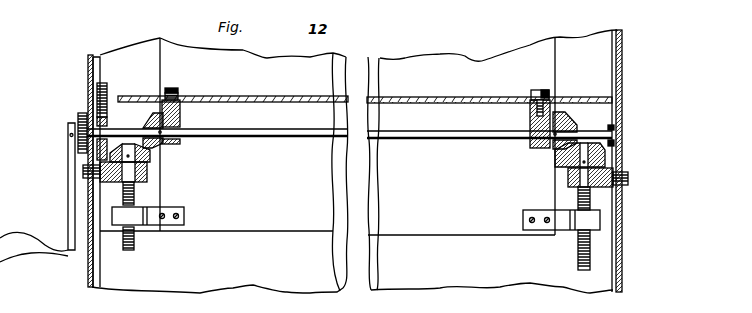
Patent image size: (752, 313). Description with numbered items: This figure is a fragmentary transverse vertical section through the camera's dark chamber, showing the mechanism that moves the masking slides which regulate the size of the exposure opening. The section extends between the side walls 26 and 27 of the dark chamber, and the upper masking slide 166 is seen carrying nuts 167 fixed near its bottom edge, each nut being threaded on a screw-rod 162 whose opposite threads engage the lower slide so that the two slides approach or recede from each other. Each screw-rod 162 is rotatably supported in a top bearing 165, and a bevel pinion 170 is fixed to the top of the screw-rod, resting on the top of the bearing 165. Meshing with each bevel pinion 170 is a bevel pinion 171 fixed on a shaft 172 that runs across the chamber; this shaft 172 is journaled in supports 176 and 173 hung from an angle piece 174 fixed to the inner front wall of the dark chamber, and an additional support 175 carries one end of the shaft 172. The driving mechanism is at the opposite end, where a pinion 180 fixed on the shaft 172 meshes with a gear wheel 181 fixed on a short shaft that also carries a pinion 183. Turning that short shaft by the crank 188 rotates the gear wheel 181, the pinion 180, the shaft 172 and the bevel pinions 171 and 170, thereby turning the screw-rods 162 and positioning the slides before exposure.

The side wall 26 is at (622, 72).
The side wall 27 is at (88, 77).
The screw-rod 162 is at (137, 241).
The top bearing 165 is at (147, 173).
The upper masking slide 166 is at (262, 229).
The nut 167 is at (138, 225).
The bevel pinion 170 is at (142, 156).
The bevel pinion 171 is at (147, 118).
The shaft 172 is at (277, 133).
The support 173 is at (528, 127).
The angle piece 174 is at (470, 100).
The additional support 175 is at (614, 125).
The support 176 is at (178, 122).
The pinion 180 is at (108, 83).
The gear wheel 181 is at (103, 56).
The pinion 183 is at (80, 112).
The crank 188 is at (72, 205).